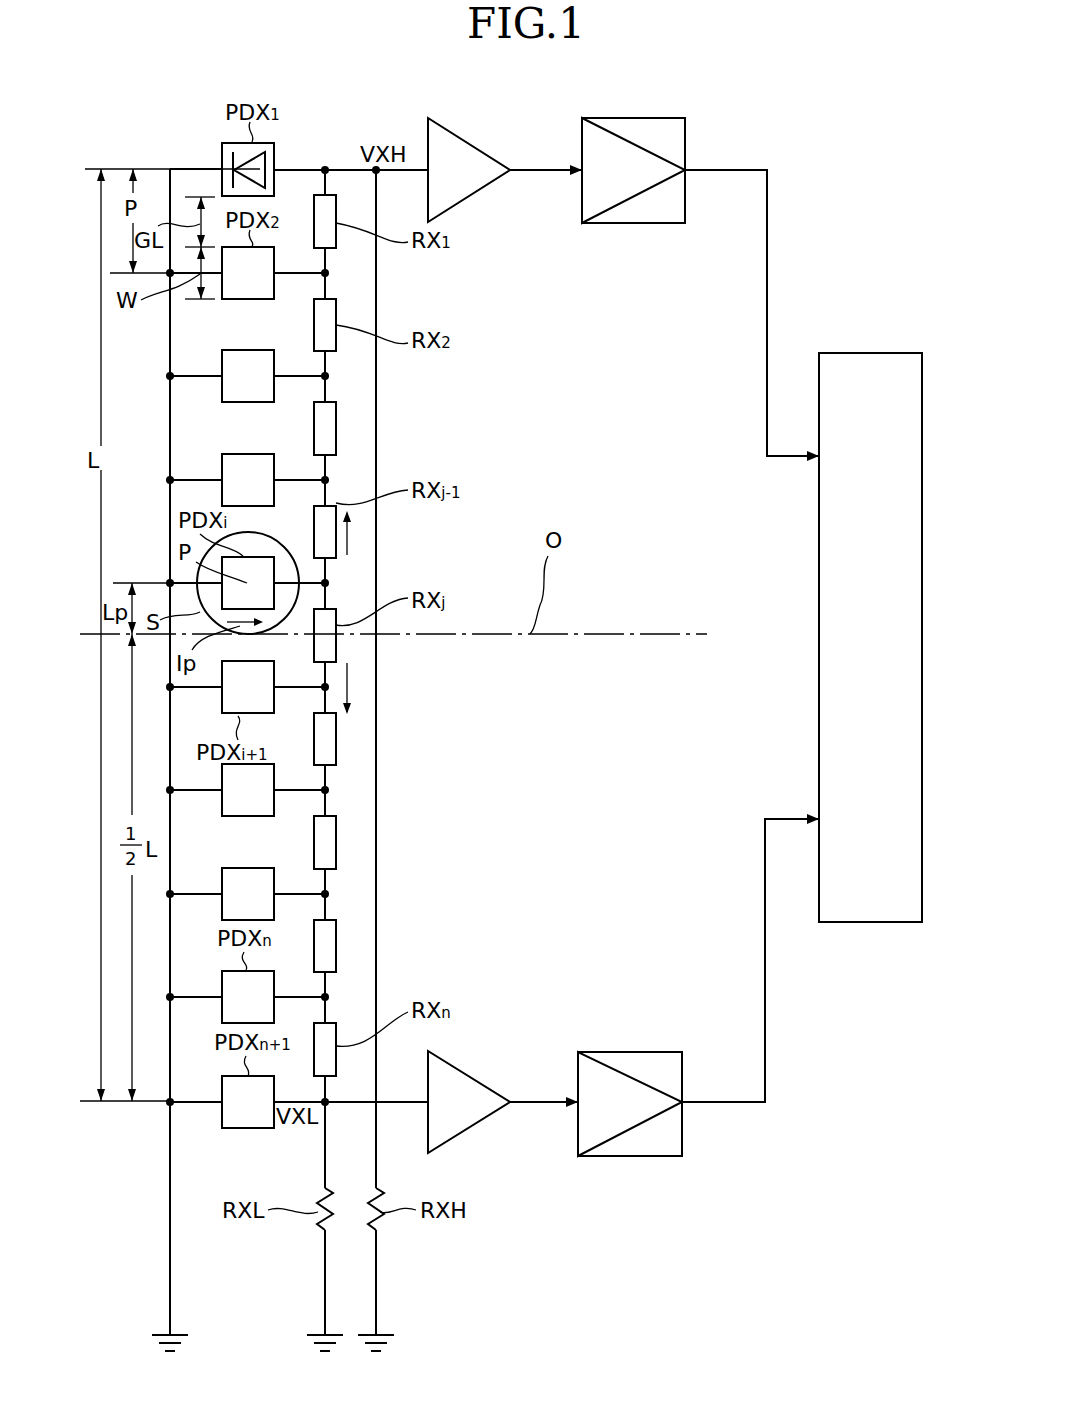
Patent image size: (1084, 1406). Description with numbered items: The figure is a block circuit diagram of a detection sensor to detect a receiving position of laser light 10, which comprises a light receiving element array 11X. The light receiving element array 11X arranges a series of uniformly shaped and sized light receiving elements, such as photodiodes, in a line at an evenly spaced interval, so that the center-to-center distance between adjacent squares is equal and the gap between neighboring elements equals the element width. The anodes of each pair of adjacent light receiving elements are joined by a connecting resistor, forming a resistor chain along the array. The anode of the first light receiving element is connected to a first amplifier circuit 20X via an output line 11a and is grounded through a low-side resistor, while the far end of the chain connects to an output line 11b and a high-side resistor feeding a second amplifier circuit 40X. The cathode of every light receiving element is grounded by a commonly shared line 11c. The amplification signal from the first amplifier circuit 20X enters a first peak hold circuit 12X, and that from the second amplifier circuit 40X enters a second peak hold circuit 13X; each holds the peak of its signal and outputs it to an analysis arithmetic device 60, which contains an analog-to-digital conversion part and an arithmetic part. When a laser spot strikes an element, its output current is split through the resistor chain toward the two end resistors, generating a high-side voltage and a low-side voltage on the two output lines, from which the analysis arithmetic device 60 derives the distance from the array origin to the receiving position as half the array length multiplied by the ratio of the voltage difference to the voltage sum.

The detection sensor to detect a receiving position of laser light 10 is at (571, 83).
The light receiving element array 11X is at (158, 543).
The output line 11a is at (345, 168).
The output line 11b is at (345, 1106).
The commonly shared line 11c is at (170, 740).
The first peak hold circuit 12X is at (647, 120).
The second peak hold circuit 13X is at (636, 1051).
The first amplifier circuit 20X is at (468, 140).
The second amplifier circuit 40X is at (488, 1055).
The analysis arithmetic device 60 is at (866, 352).